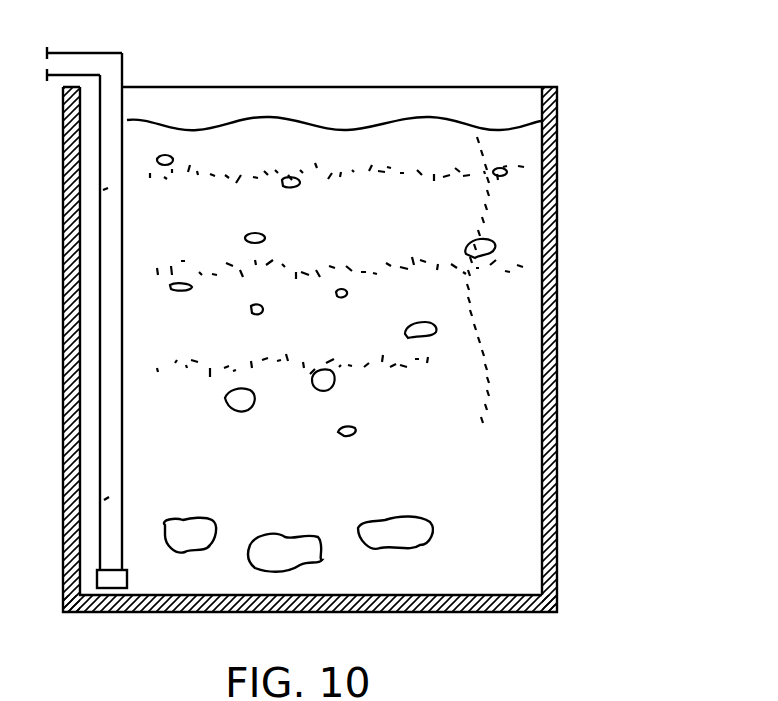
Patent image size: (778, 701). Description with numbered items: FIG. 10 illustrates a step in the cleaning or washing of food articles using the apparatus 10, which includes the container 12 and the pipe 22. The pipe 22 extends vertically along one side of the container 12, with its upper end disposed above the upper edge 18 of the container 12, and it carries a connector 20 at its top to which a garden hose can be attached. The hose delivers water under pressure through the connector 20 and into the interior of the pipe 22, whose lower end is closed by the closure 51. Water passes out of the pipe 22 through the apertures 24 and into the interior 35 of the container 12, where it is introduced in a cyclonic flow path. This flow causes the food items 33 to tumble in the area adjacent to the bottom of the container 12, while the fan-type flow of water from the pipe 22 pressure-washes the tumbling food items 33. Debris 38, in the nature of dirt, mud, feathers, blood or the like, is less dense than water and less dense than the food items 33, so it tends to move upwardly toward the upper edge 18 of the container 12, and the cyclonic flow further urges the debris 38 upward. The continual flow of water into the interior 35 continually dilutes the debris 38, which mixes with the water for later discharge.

The apparatus 10 is at (595, 137).
The container 12 is at (545, 222).
The upper edge 18 is at (272, 87).
The connector 20 is at (93, 62).
The pipe 22 is at (122, 322).
The apertures 24 is at (122, 258).
The food items 33 is at (205, 518).
The interior 35 is at (530, 452).
The debris 38 is at (398, 158).
The closure 51 is at (128, 578).